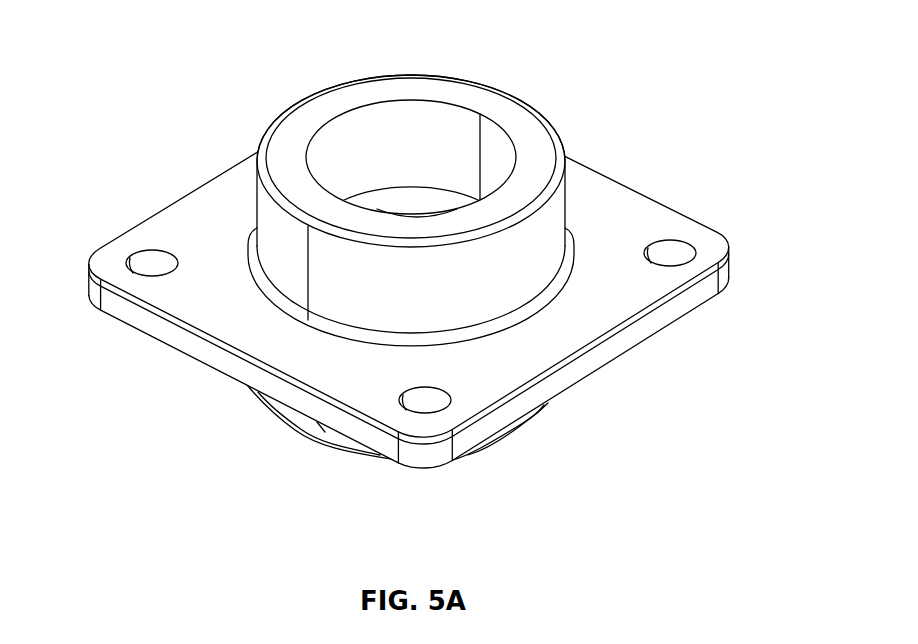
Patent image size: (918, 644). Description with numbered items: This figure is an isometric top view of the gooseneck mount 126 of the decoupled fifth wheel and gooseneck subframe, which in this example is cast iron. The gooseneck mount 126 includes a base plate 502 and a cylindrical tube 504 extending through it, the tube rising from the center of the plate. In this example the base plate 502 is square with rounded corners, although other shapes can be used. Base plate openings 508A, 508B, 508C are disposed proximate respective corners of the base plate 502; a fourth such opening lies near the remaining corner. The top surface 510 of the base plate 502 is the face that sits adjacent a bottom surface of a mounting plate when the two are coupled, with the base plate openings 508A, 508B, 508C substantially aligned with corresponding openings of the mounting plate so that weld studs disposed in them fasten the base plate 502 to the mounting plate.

The gooseneck mount 126 is at (140, 52).
The base plate 502 is at (628, 187).
The cylindrical tube 504 is at (492, 87).
The base plate opening 508A is at (445, 410).
The base plate opening 508B is at (677, 241).
The base plate opening 508C is at (130, 260).
The top surface 510 is at (225, 318).